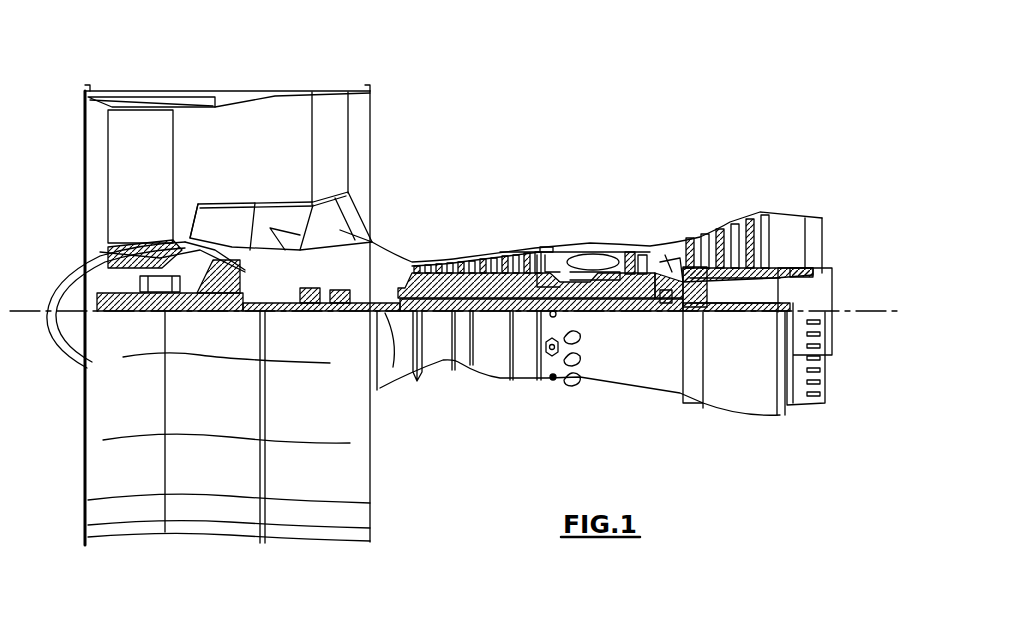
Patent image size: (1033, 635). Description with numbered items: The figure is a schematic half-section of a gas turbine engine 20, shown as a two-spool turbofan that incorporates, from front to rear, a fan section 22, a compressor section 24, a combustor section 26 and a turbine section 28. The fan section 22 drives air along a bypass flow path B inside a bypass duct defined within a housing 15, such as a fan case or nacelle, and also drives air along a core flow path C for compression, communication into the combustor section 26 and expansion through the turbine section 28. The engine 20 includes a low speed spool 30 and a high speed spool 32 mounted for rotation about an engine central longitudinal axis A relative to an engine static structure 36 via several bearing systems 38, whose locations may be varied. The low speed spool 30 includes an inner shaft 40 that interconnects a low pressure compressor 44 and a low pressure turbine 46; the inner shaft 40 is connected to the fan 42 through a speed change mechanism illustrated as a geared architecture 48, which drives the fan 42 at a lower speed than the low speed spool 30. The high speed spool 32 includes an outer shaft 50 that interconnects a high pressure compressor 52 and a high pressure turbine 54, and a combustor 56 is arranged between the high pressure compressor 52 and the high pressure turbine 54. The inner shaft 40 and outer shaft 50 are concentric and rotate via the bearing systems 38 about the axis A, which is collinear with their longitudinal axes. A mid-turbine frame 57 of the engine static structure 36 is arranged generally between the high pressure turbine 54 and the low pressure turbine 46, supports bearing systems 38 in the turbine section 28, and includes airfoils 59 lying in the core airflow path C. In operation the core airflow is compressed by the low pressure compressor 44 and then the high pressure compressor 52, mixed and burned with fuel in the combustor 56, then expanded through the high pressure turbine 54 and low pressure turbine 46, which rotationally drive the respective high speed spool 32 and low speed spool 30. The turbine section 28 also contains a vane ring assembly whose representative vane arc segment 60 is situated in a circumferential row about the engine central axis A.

The gas turbine engine 20 is at (590, 124).
The fan section 22 is at (175, 82).
The compressor section 24 is at (412, 236).
The combustor section 26 is at (583, 228).
The turbine section 28 is at (712, 190).
The housing 15 is at (228, 93).
The low speed spool 30 is at (492, 320).
The high speed spool 32 is at (527, 248).
The engine static structure 36 is at (523, 382).
The bearing systems 38 is at (333, 303).
The inner shaft 40 is at (390, 380).
The fan 42 is at (158, 192).
The low pressure compressor 44 is at (350, 206).
The low pressure turbine 46 is at (737, 216).
The geared architecture 48 is at (235, 297).
The outer shaft 50 is at (593, 307).
The high pressure compressor 52 is at (470, 261).
The high pressure turbine 54 is at (627, 252).
The combustor 56 is at (580, 262).
The mid-turbine frame 57 is at (672, 235).
The airfoils 59 is at (690, 273).
The vane arc segment 60 is at (687, 250).
The engine central longitudinal axis A is at (897, 310).
The bypass flow path B is at (200, 151).
The core flow path C is at (232, 232).